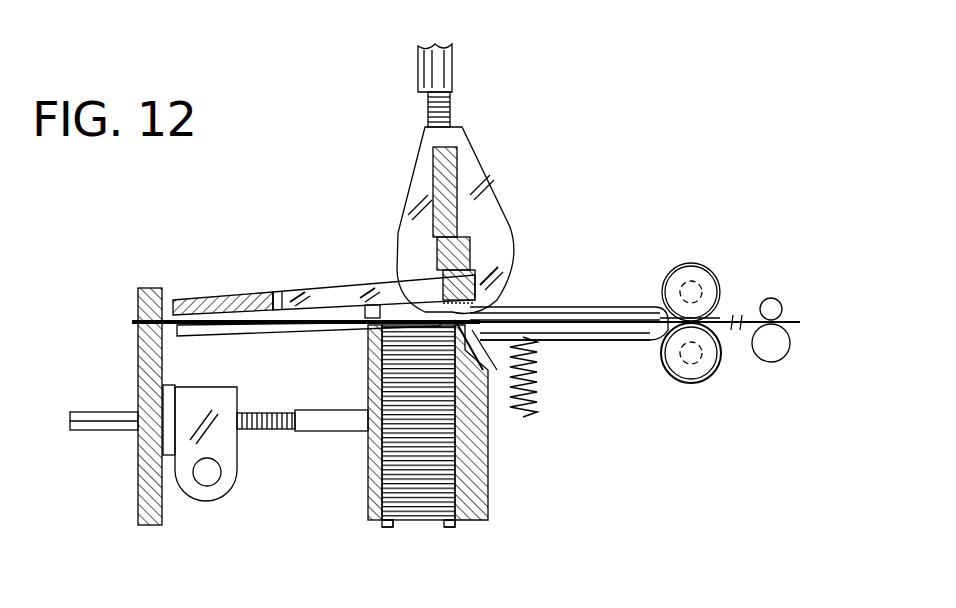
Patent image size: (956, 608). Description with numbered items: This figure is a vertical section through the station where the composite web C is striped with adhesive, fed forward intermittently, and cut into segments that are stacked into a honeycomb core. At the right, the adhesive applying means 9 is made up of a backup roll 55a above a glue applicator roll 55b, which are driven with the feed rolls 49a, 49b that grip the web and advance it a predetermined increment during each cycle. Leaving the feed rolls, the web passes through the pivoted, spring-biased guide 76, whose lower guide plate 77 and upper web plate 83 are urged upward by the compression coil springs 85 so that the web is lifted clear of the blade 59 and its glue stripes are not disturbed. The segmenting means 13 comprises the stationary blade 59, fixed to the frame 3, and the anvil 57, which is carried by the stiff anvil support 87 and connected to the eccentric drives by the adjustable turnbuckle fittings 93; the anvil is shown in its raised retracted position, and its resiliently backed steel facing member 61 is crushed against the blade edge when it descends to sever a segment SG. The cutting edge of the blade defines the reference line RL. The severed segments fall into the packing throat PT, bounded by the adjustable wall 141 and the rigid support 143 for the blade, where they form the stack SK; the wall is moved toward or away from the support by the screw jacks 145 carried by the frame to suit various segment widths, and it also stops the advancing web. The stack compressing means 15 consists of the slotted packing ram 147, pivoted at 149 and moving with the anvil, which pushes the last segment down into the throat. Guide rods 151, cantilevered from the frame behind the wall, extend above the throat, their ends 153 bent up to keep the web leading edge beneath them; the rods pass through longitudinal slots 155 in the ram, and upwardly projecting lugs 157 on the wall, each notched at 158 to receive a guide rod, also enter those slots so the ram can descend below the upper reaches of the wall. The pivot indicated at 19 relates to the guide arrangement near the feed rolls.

The adjustable turnbuckle fittings 93 is at (453, 70).
The anvil support 87 is at (457, 180).
The bent-up ends of guide rods 153 is at (417, 297).
The anvil 57 is at (483, 280).
The stack compressing means 15 is at (362, 238).
The segmenting means 13 is at (520, 252).
The steel facing member 61 is at (503, 348).
The longitudinal slots 155 is at (333, 292).
The guide rods 151 is at (280, 290).
The slotted packing ram 147 is at (311, 280).
The lugs 157 is at (330, 295).
The pivot of packing ram 149 is at (183, 294).
The notch 158 is at (373, 305).
The reference line RL is at (368, 357).
The stack SK is at (418, 462).
The blade 59 is at (465, 405).
The segment SG is at (443, 347).
The packing throat PT is at (456, 527).
The adjustable wall 141 is at (390, 525).
The rigid support 143 is at (447, 525).
The compression coil springs 85 is at (540, 387).
The upper web plate 83 is at (570, 303).
The spring-biased guide 76 is at (608, 302).
The lower guide plate 77 is at (590, 334).
The composite web C is at (786, 312).
The adhesive stripe applying means 9 is at (752, 240).
The feed roll 49a is at (673, 267).
The feed roll 49b is at (697, 383).
The backup roll 55a is at (766, 297).
The glue applicator roll 55b is at (768, 362).
The nip 19 is at (653, 332).
The frame 3 is at (133, 512).
The screw jacks 145 is at (270, 428).